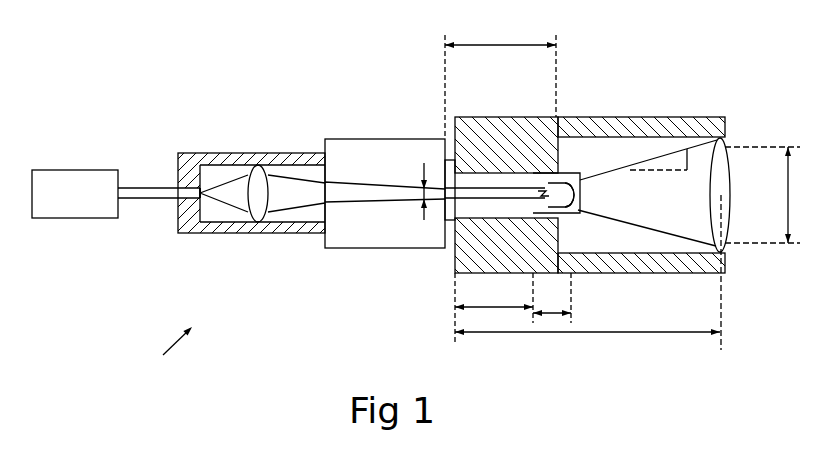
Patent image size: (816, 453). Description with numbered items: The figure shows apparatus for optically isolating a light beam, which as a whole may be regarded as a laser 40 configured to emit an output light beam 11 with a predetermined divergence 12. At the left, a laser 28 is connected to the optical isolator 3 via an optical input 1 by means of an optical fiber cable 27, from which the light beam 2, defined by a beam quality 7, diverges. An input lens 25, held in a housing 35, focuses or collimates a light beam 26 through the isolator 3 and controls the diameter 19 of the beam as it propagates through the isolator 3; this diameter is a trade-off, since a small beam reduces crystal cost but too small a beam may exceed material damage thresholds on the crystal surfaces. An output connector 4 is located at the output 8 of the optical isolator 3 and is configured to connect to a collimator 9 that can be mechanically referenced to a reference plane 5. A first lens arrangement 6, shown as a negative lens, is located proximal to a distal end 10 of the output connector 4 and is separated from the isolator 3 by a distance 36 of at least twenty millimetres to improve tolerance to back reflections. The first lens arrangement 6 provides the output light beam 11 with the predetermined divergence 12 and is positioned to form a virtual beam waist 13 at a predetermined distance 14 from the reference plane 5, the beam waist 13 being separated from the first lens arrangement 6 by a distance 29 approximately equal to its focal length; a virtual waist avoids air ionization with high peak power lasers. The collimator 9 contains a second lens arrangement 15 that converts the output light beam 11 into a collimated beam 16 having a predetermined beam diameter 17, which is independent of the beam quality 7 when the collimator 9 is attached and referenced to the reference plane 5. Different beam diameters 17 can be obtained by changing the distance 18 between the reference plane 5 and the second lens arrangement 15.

The optical input 1 is at (201, 195).
The light beam 2 is at (227, 183).
The optical isolator 3 is at (365, 139).
The output connector 4 is at (568, 174).
The reference plane 5 is at (453, 297).
The first lens arrangement 6 is at (580, 210).
The beam quality 7 is at (213, 110).
The output 8 is at (445, 175).
The collimator 9 is at (605, 118).
The distal end 10 is at (573, 208).
The output light beam 11 is at (667, 153).
The predetermined divergence 12 is at (685, 158).
The beam waist 13 is at (533, 183).
The predetermined distance 14 is at (498, 308).
The second lens arrangement 15 is at (731, 178).
The collimated beam 16 is at (758, 147).
The predetermined beam diameter 17 is at (787, 192).
The distance 18 is at (605, 333).
The beam diameter 19 is at (422, 177).
The input lens 25 is at (263, 210).
The light beam 26 is at (287, 178).
The optical fiber cable 27 is at (147, 199).
The laser 28 is at (83, 218).
The distance 29 is at (550, 314).
The housing 35 is at (188, 233).
The distance 36 is at (505, 44).
The laser 40 is at (162, 359).